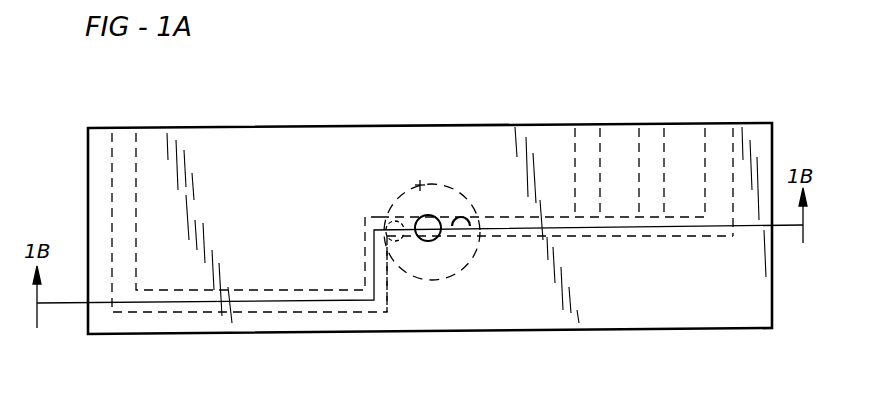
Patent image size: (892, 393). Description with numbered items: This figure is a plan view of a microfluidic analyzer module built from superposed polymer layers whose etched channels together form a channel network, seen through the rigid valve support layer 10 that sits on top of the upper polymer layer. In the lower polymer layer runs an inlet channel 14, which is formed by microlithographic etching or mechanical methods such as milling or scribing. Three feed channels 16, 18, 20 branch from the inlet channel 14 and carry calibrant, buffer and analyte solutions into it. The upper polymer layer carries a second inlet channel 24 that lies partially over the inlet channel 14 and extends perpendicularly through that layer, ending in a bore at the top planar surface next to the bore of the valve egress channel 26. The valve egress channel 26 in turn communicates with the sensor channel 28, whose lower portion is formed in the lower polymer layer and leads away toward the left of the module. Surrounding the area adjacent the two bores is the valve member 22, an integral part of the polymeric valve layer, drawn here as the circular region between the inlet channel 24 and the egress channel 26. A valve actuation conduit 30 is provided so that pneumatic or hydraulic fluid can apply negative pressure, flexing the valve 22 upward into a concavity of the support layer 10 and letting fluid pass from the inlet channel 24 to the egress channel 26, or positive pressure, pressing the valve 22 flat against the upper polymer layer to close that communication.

The valve support layer 10 is at (430, 202).
The inlet channel 14 is at (556, 259).
The feed channel 16 is at (714, 154).
The feed channel 18 is at (650, 145).
The feed channel 20 is at (579, 147).
The valve member 22 is at (432, 180).
The inlet channel 24 is at (443, 193).
The valve egress channel 26 is at (391, 305).
The sensor channel 28 is at (249, 222).
The valve actuation conduit 30 is at (446, 265).